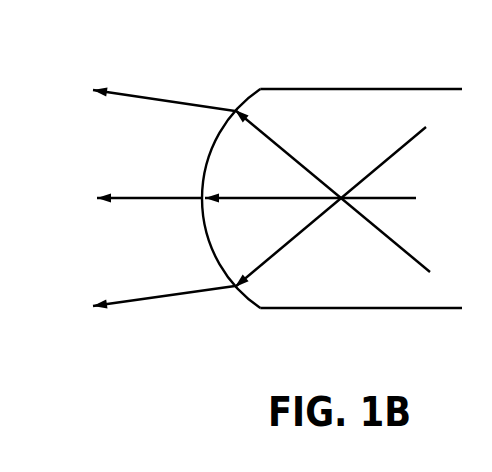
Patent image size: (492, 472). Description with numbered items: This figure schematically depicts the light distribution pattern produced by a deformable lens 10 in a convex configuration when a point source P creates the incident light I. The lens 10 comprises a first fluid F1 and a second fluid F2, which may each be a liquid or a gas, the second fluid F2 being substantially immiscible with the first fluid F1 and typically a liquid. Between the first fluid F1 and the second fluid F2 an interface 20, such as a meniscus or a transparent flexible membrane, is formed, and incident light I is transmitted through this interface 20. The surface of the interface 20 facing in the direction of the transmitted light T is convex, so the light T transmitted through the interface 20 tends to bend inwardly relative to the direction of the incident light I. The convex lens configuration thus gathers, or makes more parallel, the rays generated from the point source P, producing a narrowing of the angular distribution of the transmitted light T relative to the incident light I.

The deformable lens 10 is at (332, 240).
The interface 20 is at (206, 164).
The incident light I is at (259, 131).
The transmitted light T is at (125, 95).
The point source P is at (339, 200).
The first fluid F1 is at (161, 140).
The second fluid F2 is at (321, 129).